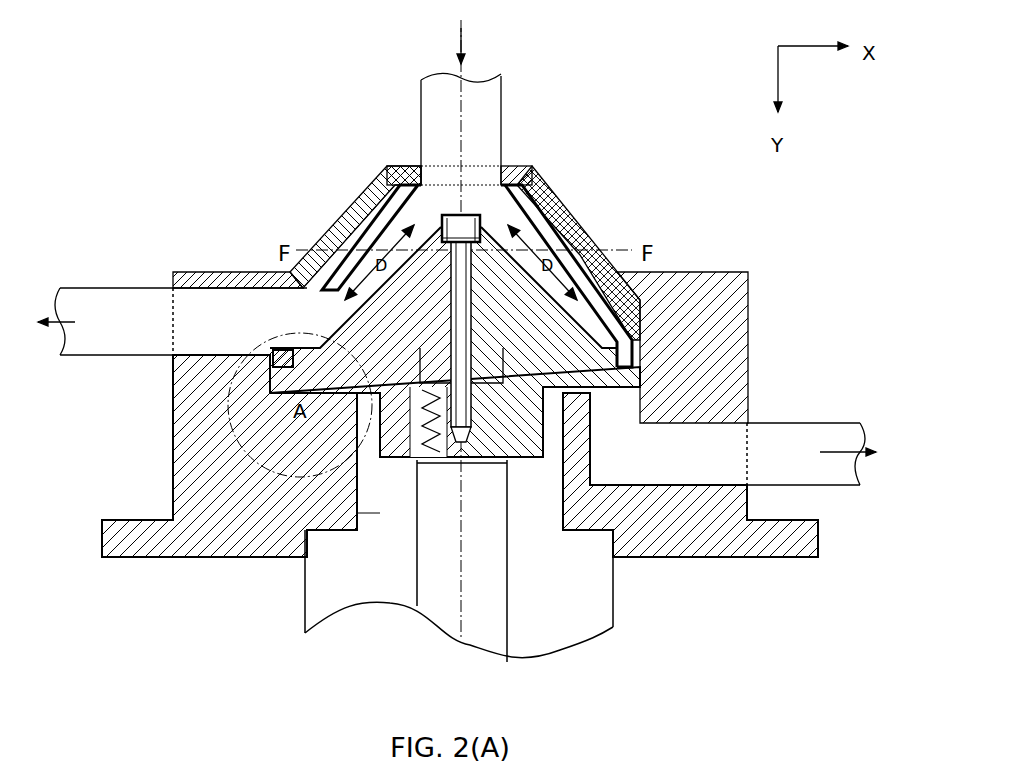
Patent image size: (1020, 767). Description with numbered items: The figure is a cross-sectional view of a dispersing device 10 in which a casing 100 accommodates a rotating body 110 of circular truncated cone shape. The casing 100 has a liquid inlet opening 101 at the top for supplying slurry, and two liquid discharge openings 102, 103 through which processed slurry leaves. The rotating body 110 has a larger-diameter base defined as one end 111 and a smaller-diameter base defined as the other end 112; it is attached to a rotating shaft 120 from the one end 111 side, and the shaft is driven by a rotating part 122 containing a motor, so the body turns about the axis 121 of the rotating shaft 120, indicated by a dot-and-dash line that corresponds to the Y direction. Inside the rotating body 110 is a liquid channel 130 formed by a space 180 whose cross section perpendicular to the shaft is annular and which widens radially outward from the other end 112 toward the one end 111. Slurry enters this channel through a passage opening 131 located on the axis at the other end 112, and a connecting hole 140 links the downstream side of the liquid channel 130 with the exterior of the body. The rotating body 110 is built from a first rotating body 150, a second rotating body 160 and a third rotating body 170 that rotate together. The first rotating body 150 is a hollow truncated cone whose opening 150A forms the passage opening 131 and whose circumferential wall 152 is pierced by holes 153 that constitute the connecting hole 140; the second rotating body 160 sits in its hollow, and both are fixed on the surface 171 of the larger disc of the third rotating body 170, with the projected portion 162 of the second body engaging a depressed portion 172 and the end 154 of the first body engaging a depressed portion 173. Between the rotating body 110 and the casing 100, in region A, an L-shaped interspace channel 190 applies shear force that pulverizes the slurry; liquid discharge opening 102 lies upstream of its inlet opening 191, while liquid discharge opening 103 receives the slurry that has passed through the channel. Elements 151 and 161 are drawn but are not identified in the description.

The dispersing device 10 is at (224, 103).
The casing 100 is at (297, 187).
The liquid inlet opening 101 is at (500, 162).
The liquid discharge opening 102 is at (173, 313).
The liquid discharge opening 103 is at (749, 452).
The rotating body 110 is at (748, 166).
The one end 111 is at (527, 472).
The other end 112 is at (469, 177).
The rotating shaft 120 is at (360, 225).
The axis 121 is at (372, 242).
The rotating part 122 is at (442, 603).
The liquid channel 130 is at (578, 199).
The space 180 is at (518, 213).
The passage opening 131 is at (406, 246).
The opening 150A is at (444, 185).
The connecting hole 140 is at (418, 335).
The hole 153 is at (307, 320).
The first rotating body 150 is at (576, 199).
The flange 151 is at (530, 172).
The circumferential wall 152 is at (346, 252).
The end 154 is at (213, 420).
The second rotating body 160 is at (605, 206).
The outer wall 161 is at (565, 205).
The projected portion 162 is at (420, 447).
The third rotating body 170 is at (701, 297).
The surface 171 is at (690, 272).
The depressed portion 172 is at (372, 395).
The depressed portion 173 is at (275, 368).
The interspace channel 190 is at (207, 386).
The inlet opening 191 is at (272, 350).